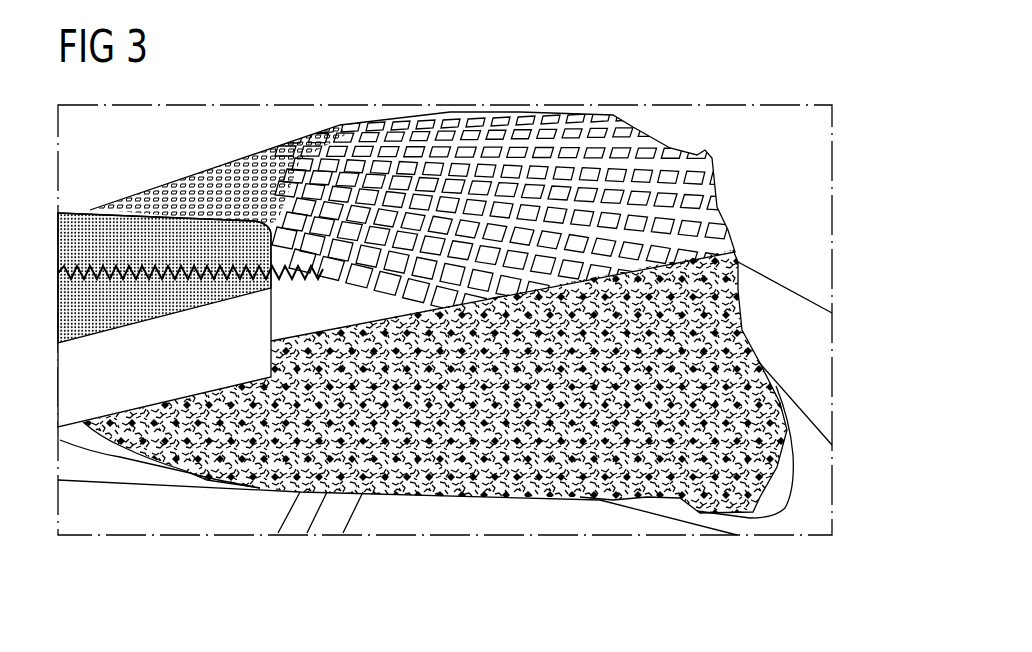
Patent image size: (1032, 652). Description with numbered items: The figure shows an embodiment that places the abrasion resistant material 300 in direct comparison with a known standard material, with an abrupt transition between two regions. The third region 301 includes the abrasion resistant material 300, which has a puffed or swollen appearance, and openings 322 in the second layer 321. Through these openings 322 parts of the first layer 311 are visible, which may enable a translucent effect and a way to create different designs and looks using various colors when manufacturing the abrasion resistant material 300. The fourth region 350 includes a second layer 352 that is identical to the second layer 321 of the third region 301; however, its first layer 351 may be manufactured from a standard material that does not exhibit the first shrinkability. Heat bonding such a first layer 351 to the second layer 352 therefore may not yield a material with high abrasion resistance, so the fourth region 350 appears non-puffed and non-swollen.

The abrasion resistant material 300 is at (234, 510).
The third region 301 is at (671, 460).
The first layer 311 is at (807, 453).
The second layer 321 is at (580, 502).
The openings 322 is at (678, 292).
The fourth region 350 is at (501, 178).
The first layer 351 is at (270, 343).
The second layer 352 is at (308, 250).